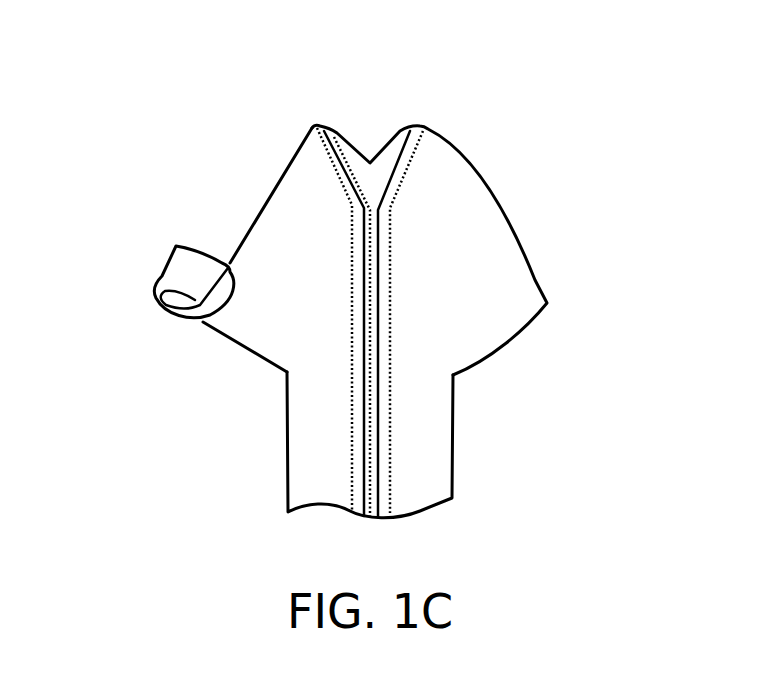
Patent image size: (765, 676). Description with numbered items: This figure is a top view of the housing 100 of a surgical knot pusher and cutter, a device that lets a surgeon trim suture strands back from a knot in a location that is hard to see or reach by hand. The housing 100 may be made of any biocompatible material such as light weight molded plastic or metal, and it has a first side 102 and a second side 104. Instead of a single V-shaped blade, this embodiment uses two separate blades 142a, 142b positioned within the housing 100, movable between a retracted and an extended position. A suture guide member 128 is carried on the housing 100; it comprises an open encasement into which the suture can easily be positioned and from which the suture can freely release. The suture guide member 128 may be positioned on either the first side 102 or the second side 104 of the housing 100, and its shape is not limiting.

The housing 100 is at (556, 166).
The first side 102 is at (520, 240).
The second side 104 is at (268, 187).
The suture guide member 128 is at (170, 253).
The first separate blade 142a is at (325, 140).
The second separate blade 142b is at (412, 140).